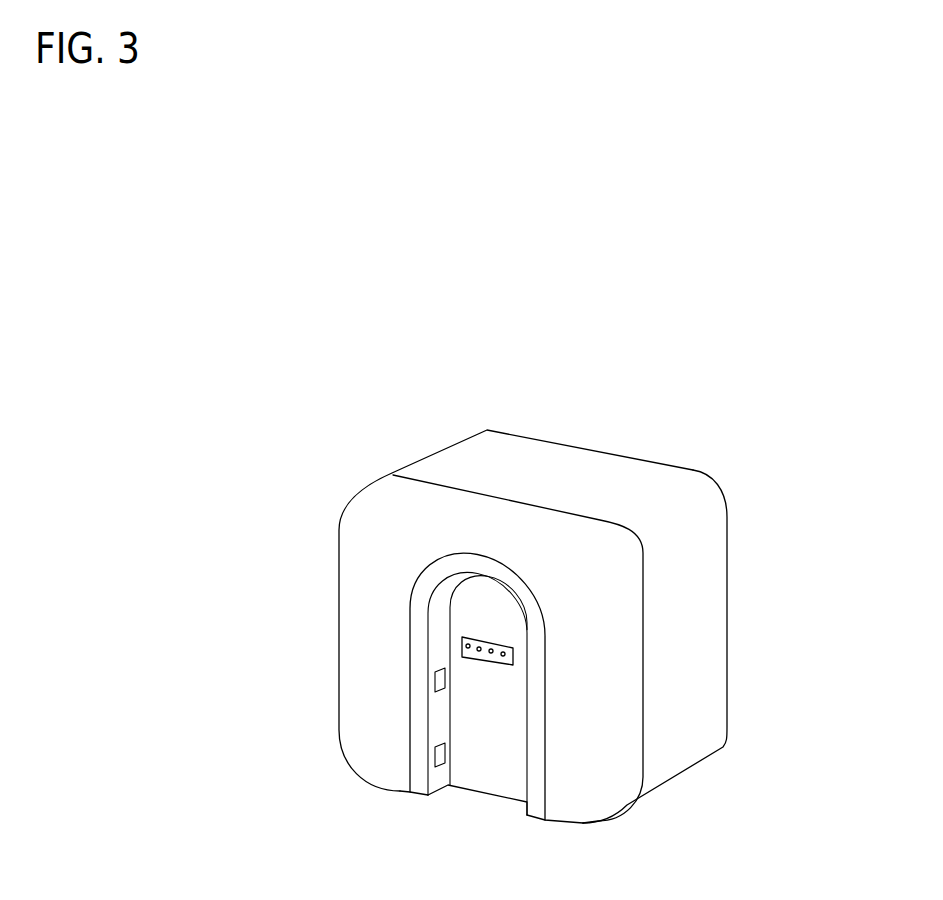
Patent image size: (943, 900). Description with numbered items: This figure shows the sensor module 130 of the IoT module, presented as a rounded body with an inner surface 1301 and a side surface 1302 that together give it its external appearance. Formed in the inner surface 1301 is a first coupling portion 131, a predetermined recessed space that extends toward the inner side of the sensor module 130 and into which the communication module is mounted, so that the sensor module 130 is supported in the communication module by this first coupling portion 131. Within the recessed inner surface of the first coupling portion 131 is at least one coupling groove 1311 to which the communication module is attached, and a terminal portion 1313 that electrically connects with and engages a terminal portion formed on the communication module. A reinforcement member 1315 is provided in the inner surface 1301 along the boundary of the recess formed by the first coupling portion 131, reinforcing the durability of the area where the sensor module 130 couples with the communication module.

The sensor module 130 is at (753, 449).
The first coupling portion 131 is at (483, 712).
The inner surface 1301 is at (582, 730).
The side surface 1302 is at (693, 657).
The coupling groove 1311 is at (435, 685).
The terminal portion 1313 is at (465, 637).
The reinforcement member 1315 is at (523, 586).